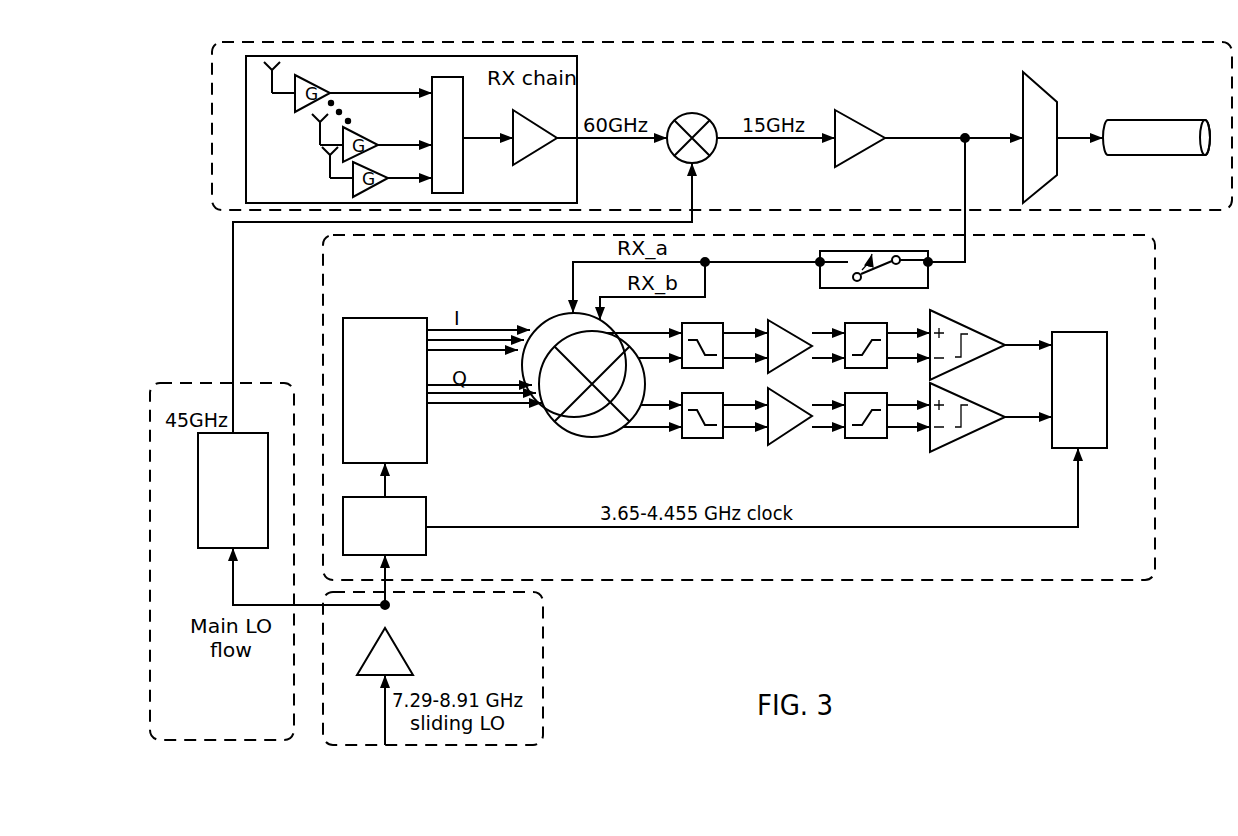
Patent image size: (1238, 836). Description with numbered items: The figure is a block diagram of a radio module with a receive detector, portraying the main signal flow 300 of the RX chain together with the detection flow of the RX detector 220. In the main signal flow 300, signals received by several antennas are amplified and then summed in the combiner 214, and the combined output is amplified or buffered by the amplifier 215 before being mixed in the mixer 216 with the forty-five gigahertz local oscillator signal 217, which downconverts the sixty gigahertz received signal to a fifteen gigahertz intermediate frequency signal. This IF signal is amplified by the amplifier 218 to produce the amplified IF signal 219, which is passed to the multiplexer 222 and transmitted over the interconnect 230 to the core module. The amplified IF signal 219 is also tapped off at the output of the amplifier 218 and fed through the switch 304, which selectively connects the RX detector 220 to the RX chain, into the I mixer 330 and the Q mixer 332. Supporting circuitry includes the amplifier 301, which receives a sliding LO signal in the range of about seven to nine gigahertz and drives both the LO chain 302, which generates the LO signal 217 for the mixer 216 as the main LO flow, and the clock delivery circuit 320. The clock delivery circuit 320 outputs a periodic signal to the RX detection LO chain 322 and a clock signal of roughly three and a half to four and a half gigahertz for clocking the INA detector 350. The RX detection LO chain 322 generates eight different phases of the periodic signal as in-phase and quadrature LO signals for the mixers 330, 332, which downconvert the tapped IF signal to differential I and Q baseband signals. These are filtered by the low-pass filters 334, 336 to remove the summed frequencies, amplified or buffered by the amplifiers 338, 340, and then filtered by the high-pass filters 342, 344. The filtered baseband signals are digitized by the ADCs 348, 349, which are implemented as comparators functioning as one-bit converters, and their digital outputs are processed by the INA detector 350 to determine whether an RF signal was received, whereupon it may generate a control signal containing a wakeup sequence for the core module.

The main signal flow 300 is at (1147, 42).
The combiner 214 is at (432, 122).
The amplifier 215 is at (537, 158).
The mixer 216 is at (698, 114).
The local oscillator (LO) signal 217 is at (233, 295).
The amplifier 218 is at (842, 114).
The amplified IF signal 219 is at (985, 136).
The RX detector 220 is at (1072, 581).
The multiplexer (MUX) 222 is at (1040, 83).
The interconnect 230 is at (1145, 120).
The amplifier 301 is at (400, 645).
The LO chain 302 is at (218, 548).
The switch 304 is at (930, 277).
The clock delivery circuit 320 is at (405, 497).
The RX detection LO chain 322 is at (373, 318).
The in-phase (I) mixer 330 is at (555, 318).
The quadrature (Q) mixer 332 is at (577, 436).
The low-pass filter 334 is at (708, 322).
The low-pass filter 336 is at (700, 440).
The amplifier 338 is at (780, 320).
The amplifier 340 is at (780, 445).
The high-pass filter 342 is at (868, 322).
The high-pass filter 344 is at (865, 440).
The ADC 348 is at (960, 320).
The ADC 349 is at (955, 440).
The INA detector 350 is at (1072, 332).